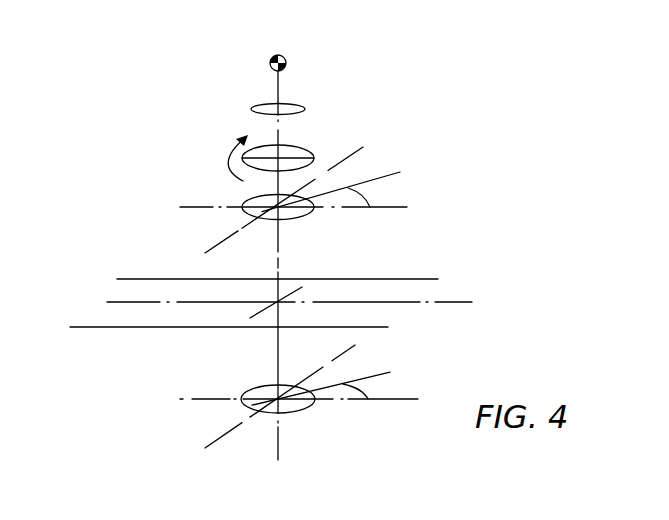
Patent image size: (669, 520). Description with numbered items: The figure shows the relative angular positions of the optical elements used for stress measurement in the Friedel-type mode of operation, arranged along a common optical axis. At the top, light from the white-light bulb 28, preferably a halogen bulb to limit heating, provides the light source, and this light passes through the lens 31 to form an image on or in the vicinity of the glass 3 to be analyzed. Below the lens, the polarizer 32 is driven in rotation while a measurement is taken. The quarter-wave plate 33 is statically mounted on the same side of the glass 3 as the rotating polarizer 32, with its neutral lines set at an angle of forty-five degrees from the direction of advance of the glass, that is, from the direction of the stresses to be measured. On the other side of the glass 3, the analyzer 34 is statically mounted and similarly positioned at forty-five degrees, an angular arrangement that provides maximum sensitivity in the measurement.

The white-light bulb 28 is at (270, 62).
The lens 31 is at (264, 108).
The polarizer 32 is at (307, 147).
The quarter-wave plate 33 is at (250, 200).
The glass 3 is at (162, 292).
The analyzer 34 is at (256, 386).